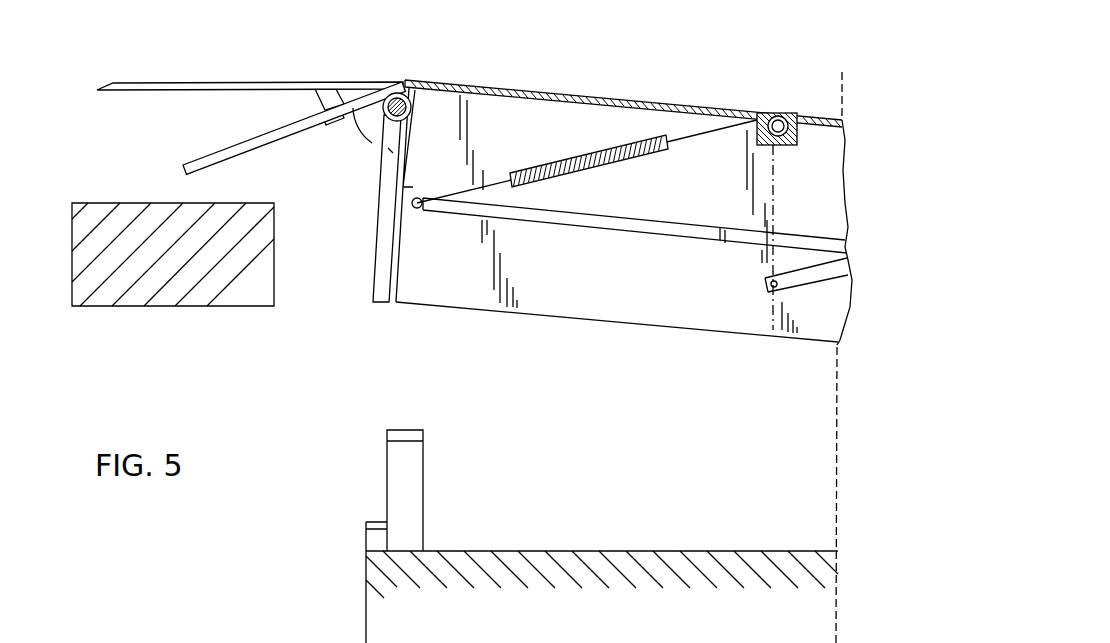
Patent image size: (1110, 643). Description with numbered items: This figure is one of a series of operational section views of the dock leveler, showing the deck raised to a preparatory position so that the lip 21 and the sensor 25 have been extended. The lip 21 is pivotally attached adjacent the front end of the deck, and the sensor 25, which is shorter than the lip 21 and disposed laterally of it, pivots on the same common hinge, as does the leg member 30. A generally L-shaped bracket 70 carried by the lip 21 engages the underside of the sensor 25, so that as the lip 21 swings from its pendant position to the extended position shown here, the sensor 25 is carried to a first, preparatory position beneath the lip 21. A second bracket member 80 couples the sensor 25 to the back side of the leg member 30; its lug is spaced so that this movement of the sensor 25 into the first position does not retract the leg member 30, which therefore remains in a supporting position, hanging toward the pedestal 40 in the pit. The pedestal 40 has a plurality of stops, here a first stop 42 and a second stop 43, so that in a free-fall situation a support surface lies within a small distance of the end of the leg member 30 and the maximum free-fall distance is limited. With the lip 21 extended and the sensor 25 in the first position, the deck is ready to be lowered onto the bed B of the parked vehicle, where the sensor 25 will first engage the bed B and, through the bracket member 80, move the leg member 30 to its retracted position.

The lip 21 is at (222, 83).
The sensor 25 is at (287, 133).
The leg member 30 is at (380, 272).
The pedestal 40 is at (410, 497).
The first stop 42 is at (375, 520).
The second stop 43 is at (405, 430).
The bracket 70 is at (323, 100).
The bracket member 80 is at (372, 137).
The bed B is at (107, 202).